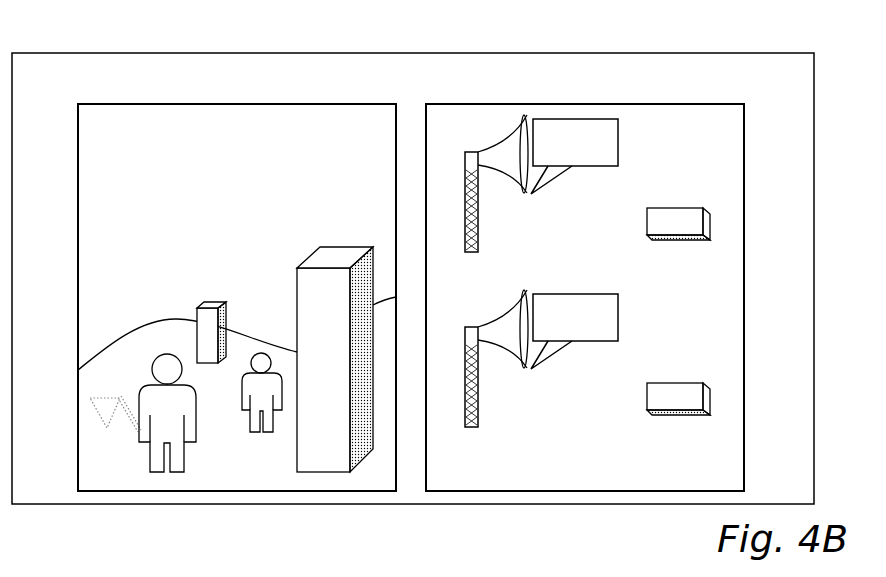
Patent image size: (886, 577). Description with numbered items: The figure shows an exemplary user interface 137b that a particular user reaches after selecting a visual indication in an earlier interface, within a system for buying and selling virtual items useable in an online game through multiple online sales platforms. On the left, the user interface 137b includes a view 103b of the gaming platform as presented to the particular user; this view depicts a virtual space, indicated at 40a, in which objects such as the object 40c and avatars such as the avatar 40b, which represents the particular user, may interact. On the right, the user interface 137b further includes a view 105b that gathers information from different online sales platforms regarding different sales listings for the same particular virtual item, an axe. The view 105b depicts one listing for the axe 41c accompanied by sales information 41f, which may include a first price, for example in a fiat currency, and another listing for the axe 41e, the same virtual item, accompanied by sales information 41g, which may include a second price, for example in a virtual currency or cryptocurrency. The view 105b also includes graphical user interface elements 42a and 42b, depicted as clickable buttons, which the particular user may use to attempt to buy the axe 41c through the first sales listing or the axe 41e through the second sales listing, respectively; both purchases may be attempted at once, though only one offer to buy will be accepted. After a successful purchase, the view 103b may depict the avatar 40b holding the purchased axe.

The user interface 137b is at (231, 45).
The view of gaming platform 103b is at (136, 91).
The view 105b is at (534, 92).
The virtual environment scene 40a is at (185, 170).
The avatar 40b is at (233, 472).
The object 40c is at (344, 467).
The axe 41c is at (549, 237).
The axe 41e is at (549, 412).
The sales information 41f is at (593, 152).
The sales information 41g is at (593, 327).
The graphical user interface element 42a is at (721, 200).
The graphical user interface element 42b is at (721, 376).